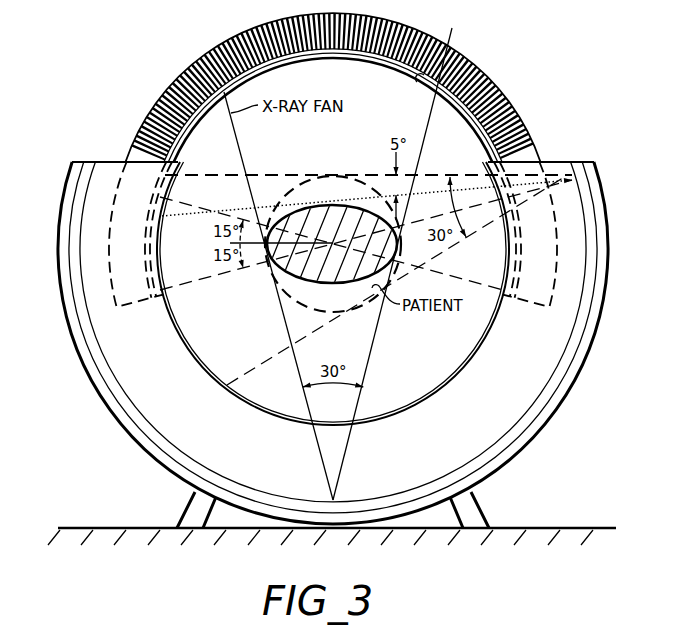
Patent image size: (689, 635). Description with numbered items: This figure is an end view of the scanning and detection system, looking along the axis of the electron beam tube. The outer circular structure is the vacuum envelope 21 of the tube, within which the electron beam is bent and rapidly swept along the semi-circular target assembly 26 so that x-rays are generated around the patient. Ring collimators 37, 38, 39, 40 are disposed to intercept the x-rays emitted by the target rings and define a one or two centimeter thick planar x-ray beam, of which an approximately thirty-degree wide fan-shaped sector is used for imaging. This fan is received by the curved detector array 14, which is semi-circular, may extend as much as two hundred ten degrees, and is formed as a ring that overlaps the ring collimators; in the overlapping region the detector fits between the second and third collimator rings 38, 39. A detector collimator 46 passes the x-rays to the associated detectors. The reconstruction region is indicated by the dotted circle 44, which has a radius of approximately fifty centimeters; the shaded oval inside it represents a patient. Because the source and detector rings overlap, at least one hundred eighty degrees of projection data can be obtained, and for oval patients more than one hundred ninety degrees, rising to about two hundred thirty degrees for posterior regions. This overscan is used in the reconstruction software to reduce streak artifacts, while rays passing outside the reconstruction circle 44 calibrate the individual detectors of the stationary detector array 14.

The detector array 14 is at (212, 46).
The vacuum envelope 21 is at (130, 437).
The target assembly 26 is at (505, 418).
The ring collimator 37 is at (333, 307).
The ring collimator 38 is at (333, 307).
The ring collimator 39 is at (333, 307).
The ring collimator 40 is at (434, 384).
The reconstruction region 44 is at (295, 298).
The detector collimator 46 is at (421, 77).